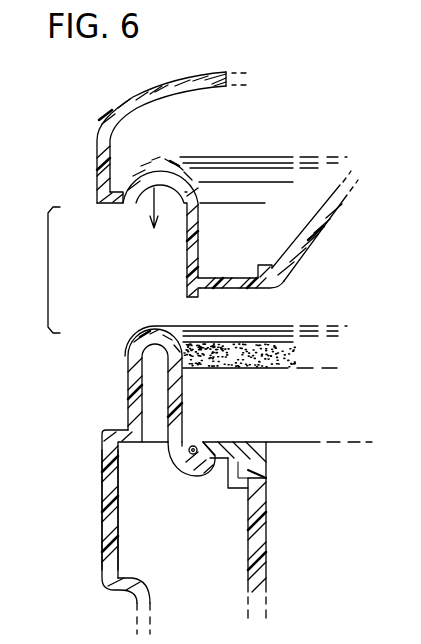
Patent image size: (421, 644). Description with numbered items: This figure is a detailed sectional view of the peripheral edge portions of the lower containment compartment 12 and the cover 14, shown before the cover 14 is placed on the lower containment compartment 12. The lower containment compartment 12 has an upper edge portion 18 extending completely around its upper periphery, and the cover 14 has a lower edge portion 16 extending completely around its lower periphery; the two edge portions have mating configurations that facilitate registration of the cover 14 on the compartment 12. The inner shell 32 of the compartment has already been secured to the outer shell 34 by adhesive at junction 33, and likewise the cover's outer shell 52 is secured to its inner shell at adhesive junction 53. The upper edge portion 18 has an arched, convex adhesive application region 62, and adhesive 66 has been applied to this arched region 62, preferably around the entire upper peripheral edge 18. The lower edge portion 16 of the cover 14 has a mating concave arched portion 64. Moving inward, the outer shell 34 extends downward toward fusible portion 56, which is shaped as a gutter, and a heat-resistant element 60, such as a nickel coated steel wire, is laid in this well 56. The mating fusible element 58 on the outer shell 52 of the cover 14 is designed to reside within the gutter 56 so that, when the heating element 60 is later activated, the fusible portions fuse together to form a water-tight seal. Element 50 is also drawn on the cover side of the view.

The lower containment compartment 12 is at (102, 508).
The cover 14 is at (103, 128).
The lower edge portion 16 is at (108, 206).
The upper edge portion 18 is at (127, 345).
The inner shell 32 is at (260, 538).
The junction 33 is at (267, 475).
The outer shell 34 is at (110, 498).
The inclined panel 50 is at (312, 228).
The outer shell 52 is at (233, 283).
The junction 53 is at (270, 265).
The fusible portion 56 is at (192, 460).
The fusible element 58 is at (190, 290).
The heat-resistant element 60 is at (195, 445).
The adhesive application region 62 is at (147, 338).
The arched portion 64 is at (160, 160).
The adhesive 66 is at (268, 345).